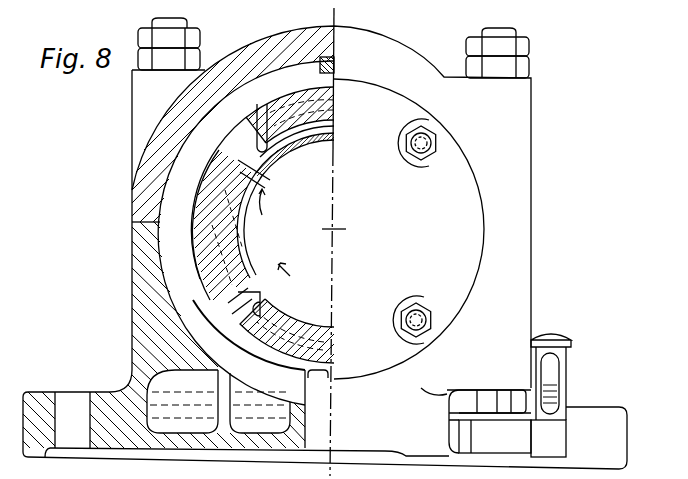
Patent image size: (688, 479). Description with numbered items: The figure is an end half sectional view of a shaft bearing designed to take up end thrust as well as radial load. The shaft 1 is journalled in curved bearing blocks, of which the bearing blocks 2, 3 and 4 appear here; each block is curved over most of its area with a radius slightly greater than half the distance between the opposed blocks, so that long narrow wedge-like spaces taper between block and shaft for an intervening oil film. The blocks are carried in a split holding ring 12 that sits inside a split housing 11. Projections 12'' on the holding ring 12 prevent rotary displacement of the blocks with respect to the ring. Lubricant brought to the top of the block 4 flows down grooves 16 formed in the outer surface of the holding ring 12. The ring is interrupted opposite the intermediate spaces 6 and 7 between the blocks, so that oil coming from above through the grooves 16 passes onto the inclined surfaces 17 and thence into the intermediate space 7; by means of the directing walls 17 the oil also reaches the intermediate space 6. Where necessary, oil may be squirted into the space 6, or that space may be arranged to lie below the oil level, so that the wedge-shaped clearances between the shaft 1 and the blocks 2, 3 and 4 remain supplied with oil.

The shaft 1 is at (305, 198).
The bearing block 2 is at (323, 335).
The bearing block 3 is at (227, 253).
The bearing block 4 is at (303, 118).
The intermediate space 6 is at (262, 273).
The intermediate space 7 is at (262, 172).
The split housing 11 is at (143, 202).
The split holding ring 12 is at (254, 115).
The projections 12'' is at (223, 241).
The grooves 16 is at (315, 92).
The inclined surfaces 17 is at (258, 127).